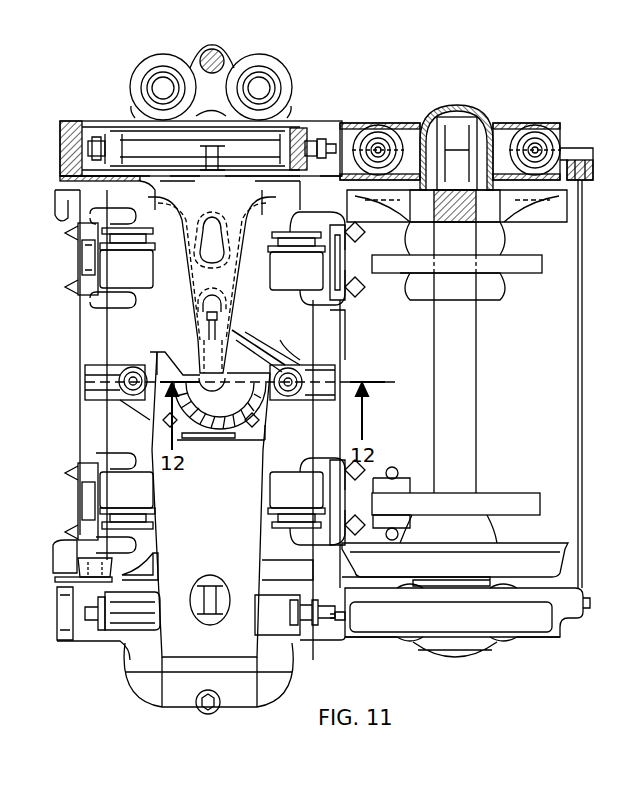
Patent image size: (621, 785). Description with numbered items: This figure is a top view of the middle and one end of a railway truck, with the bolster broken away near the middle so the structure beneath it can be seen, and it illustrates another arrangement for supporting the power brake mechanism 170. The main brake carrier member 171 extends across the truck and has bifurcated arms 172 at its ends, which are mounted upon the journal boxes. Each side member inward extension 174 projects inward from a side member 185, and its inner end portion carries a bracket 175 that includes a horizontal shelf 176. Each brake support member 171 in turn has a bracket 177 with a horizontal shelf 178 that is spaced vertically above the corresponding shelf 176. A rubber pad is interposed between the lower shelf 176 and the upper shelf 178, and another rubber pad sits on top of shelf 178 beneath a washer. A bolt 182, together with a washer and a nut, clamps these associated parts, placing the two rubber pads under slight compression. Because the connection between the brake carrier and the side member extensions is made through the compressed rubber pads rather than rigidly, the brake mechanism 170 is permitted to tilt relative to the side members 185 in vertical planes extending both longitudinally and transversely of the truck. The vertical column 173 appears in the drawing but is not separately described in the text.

The power brake mechanism 170 is at (227, 380).
The main brake carrier member 171 is at (92, 331).
The bifurcated arms 172 is at (375, 568).
The vertical column 173 is at (476, 418).
The side member inward extension 174 is at (200, 333).
The bracket 175 is at (240, 342).
The horizontal shelf 176 is at (280, 350).
The bracket 177 is at (113, 364).
The horizontal shelf 178 is at (312, 425).
The bolt 182 is at (312, 398).
The side members 185 is at (316, 650).